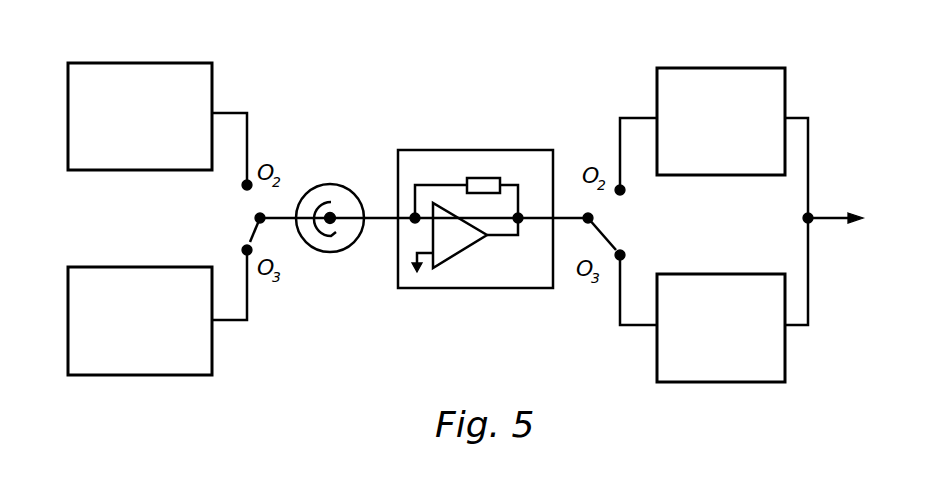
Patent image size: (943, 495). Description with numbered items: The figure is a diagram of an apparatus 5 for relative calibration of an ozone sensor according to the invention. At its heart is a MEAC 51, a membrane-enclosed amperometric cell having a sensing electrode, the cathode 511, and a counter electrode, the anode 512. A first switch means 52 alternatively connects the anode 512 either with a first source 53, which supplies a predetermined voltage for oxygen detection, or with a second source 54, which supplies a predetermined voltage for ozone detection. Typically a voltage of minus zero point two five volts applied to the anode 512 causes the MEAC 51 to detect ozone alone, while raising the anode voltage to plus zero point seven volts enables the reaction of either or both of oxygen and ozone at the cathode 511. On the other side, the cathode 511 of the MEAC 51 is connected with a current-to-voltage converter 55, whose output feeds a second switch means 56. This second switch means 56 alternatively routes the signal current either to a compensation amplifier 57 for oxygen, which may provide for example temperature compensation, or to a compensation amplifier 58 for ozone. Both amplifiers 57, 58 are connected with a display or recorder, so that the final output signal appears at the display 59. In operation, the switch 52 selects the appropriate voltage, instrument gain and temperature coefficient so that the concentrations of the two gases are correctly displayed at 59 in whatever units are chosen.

The apparatus 5 is at (488, 123).
The MEAC 51 is at (339, 183).
The cathode 511 is at (333, 223).
The anode 512 is at (322, 234).
The first switch means 52 is at (251, 236).
The first source 53 is at (150, 130).
The second source 54 is at (152, 337).
The current-to-voltage converter 55 is at (487, 265).
The second switch means 56 is at (600, 235).
The compensation amplifier for oxygen 57 is at (729, 137).
The compensation amplifier for ozone 58 is at (729, 343).
The display 59 is at (862, 197).